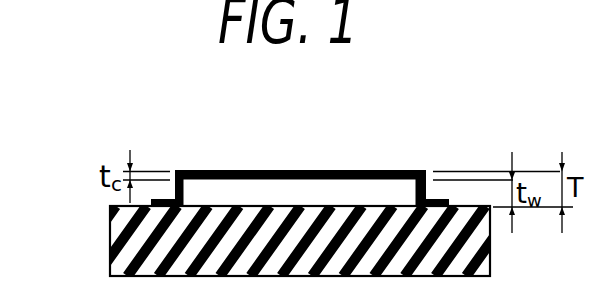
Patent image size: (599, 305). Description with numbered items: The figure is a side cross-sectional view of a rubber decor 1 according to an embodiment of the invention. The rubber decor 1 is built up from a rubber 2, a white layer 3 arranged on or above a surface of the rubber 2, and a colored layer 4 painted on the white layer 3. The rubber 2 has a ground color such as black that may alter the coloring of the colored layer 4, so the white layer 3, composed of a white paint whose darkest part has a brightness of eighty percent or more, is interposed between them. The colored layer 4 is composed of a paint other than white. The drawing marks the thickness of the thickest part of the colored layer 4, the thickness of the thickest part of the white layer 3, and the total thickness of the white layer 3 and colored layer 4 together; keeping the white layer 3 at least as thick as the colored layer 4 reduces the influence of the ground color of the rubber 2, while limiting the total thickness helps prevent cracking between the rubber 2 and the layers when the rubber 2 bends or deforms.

The rubber decor 1 is at (274, 182).
The rubber 2 is at (118, 254).
The white layer 3 is at (225, 192).
The colored layer 4 is at (270, 170).